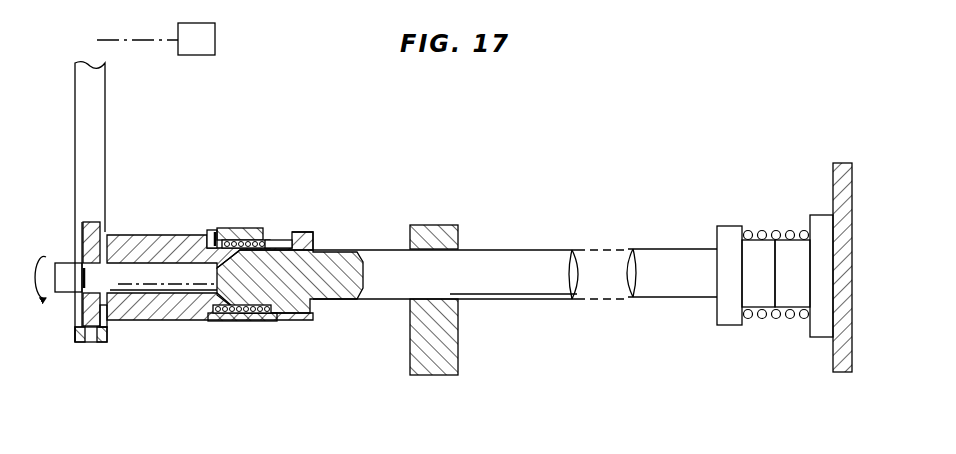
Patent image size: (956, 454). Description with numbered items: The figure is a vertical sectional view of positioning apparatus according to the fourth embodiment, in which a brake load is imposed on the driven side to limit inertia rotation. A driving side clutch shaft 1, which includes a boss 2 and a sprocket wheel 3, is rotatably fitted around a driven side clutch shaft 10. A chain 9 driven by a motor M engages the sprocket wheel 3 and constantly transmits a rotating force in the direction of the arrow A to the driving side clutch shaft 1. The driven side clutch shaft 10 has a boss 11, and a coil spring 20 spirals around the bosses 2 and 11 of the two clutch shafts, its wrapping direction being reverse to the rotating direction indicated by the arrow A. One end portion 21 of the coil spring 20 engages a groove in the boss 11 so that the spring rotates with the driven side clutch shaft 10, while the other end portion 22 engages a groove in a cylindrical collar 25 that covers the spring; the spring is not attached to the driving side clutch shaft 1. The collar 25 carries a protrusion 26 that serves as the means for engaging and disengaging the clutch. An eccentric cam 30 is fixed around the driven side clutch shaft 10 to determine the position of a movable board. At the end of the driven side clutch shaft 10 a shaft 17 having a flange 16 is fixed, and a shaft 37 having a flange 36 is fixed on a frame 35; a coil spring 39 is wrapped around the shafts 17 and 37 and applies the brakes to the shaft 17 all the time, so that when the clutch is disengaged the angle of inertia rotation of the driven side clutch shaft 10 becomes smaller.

The driving side clutch shaft 1 is at (138, 322).
The boss 2 is at (132, 232).
The sprocket wheel 3 is at (85, 228).
The chain 9 is at (95, 103).
The driven side clutch shaft 10 is at (343, 302).
The boss 11 is at (307, 232).
The flange 16 is at (728, 232).
The shaft 17 is at (755, 323).
The coil spring 20 is at (228, 323).
The end portion 21 is at (290, 232).
The other end portion 22 is at (215, 232).
The collar 25 is at (277, 232).
The protrusion 26 is at (235, 232).
The eccentric cam 30 is at (458, 333).
The frame 35 is at (835, 171).
The flange 36 is at (822, 340).
The shaft 37 is at (795, 323).
The coil spring 39 is at (762, 233).
The arrow A is at (58, 266).
The motor M is at (215, 40).